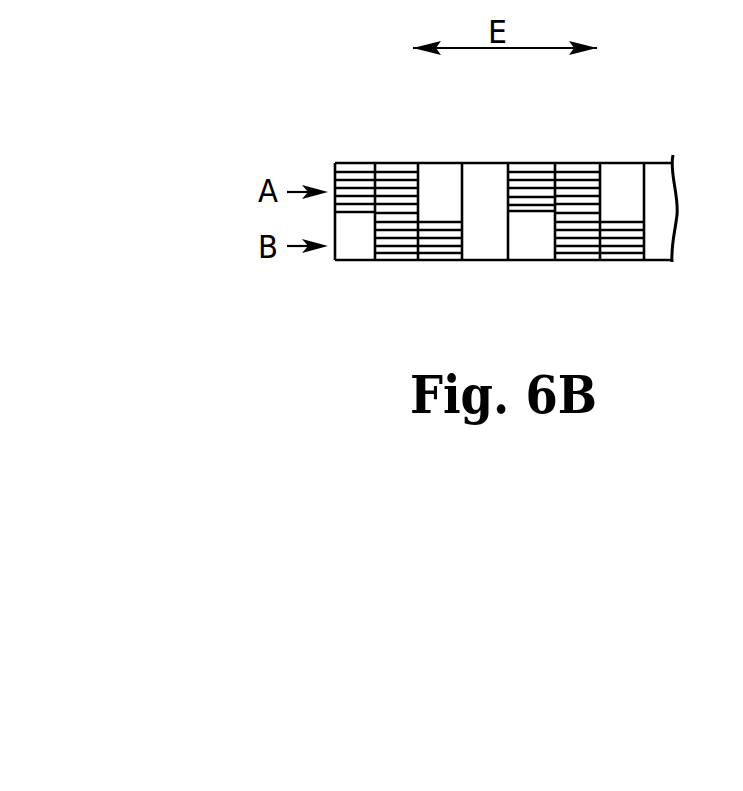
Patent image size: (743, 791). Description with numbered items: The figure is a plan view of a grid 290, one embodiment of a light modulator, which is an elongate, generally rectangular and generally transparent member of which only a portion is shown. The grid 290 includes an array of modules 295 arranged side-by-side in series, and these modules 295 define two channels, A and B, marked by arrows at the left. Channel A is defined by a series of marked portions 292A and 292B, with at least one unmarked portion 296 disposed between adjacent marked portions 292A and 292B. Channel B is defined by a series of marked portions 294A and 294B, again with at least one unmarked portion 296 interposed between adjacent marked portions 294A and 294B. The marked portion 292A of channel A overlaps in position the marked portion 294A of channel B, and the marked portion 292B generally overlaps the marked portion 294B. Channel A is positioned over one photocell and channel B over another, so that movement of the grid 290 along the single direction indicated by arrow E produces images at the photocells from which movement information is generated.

The grid 290 is at (440, 152).
The marked portion 292A is at (365, 143).
The marked portion 292B is at (532, 163).
The marked portion 294A is at (383, 261).
The marked portion 294B is at (622, 261).
The module 295 is at (347, 261).
The unmarked portion 296 is at (482, 163).